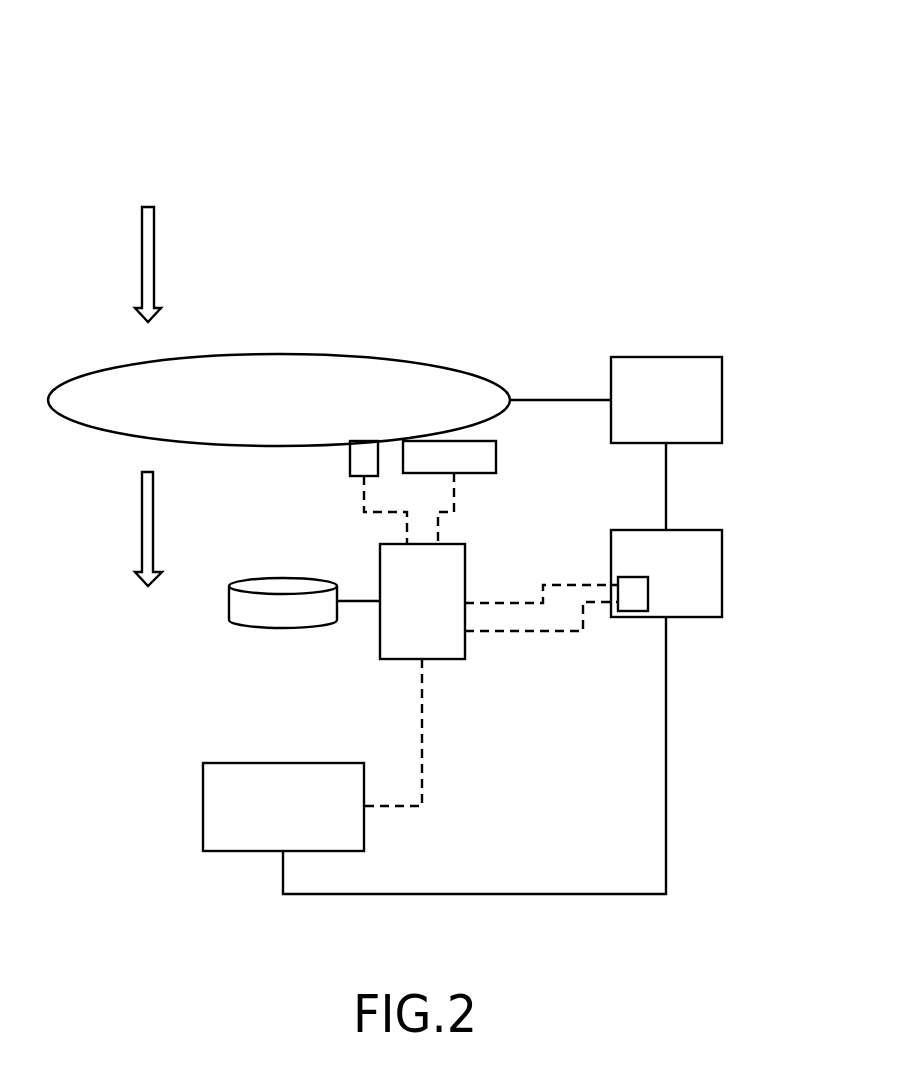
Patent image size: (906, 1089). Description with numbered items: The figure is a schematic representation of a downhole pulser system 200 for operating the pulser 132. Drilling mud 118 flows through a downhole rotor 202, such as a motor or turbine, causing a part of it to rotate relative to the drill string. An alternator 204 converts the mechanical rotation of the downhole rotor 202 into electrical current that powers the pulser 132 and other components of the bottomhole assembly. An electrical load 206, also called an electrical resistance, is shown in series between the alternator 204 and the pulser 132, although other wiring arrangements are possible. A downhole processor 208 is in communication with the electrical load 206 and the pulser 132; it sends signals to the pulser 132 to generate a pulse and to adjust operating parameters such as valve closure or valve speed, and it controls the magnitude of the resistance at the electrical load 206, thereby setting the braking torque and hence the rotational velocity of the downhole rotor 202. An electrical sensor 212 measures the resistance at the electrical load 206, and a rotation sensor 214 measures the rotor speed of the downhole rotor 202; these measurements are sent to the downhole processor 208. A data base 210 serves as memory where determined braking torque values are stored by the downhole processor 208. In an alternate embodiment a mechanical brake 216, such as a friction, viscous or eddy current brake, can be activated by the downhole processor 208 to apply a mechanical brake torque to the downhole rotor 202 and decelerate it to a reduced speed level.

The downhole pulser system 200 is at (140, 104).
The drilling mud 118 is at (141, 261).
The downhole rotor 202 is at (435, 362).
The alternator 204 is at (722, 397).
The electrical load 206 is at (722, 573).
The downhole processor 208 is at (440, 659).
The data base 210 is at (277, 578).
The electrical sensor 212 is at (633, 613).
The rotation sensor 214 is at (350, 458).
The mechanical brake 216 is at (496, 458).
The pulser 132 is at (203, 795).